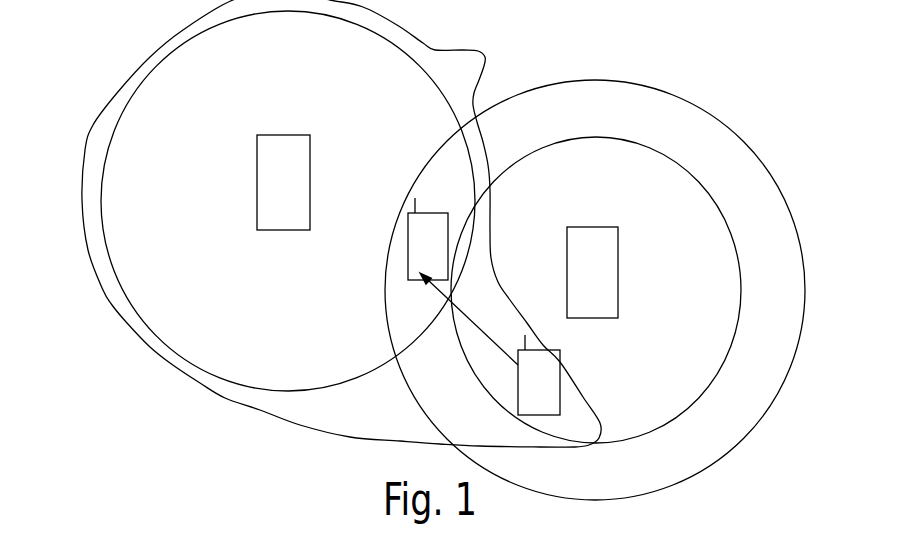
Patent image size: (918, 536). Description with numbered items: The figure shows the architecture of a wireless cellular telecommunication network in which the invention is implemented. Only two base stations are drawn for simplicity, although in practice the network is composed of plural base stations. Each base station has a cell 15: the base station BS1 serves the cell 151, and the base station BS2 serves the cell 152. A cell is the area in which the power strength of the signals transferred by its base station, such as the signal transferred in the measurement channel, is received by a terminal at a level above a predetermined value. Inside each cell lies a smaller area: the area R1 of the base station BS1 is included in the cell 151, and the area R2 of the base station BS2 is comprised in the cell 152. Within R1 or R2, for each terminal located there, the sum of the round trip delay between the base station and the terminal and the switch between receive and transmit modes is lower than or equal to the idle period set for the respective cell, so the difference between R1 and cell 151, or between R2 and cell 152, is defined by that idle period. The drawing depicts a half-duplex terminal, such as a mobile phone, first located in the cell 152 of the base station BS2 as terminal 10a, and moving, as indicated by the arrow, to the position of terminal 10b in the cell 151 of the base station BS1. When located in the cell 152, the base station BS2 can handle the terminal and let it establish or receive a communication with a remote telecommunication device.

The cell 15 is at (425, 250).
The cell of the base station BS1 151 is at (88, 152).
The cell of the base station BS2 152 is at (722, 458).
The area of the base station BS1 R1 is at (152, 70).
The area of the base station BS2 R2 is at (570, 139).
The terminal 10a is at (545, 349).
The terminal 10b is at (438, 213).
The base station BS1 is at (283, 182).
The base station BS2 is at (592, 272).